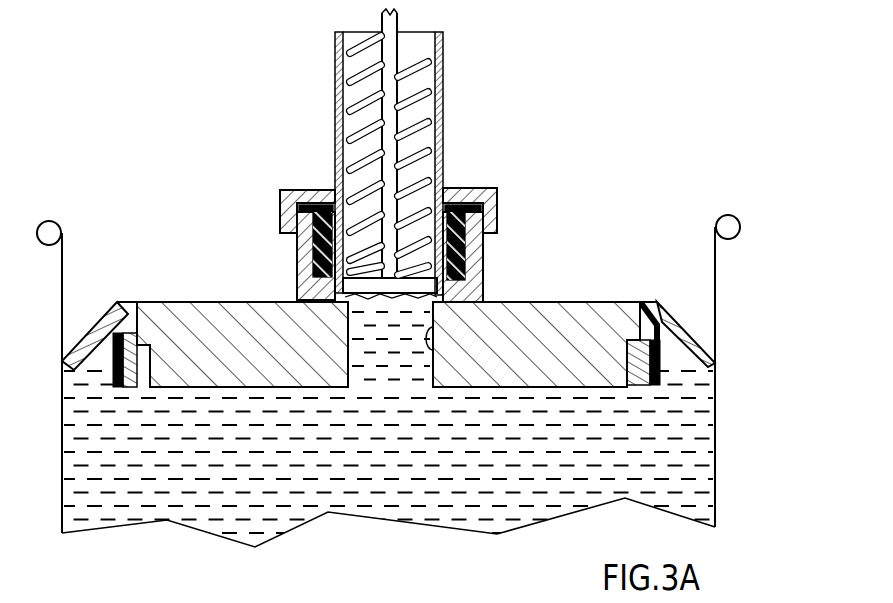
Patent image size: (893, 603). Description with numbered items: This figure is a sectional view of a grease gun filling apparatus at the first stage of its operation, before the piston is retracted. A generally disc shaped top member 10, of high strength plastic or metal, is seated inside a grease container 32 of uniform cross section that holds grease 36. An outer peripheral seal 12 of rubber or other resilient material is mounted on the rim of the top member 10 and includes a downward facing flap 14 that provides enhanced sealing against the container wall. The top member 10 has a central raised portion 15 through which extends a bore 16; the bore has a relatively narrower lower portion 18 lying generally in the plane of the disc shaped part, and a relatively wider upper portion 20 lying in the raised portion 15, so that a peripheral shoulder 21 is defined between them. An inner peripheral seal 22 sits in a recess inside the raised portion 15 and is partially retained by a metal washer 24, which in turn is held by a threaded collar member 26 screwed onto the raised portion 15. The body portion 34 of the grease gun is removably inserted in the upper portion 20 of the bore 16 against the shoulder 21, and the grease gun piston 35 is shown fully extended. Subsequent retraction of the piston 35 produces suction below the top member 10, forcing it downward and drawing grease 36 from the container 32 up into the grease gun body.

The top member 10 is at (560, 302).
The outer peripheral seal 12 is at (650, 300).
The downward facing flap 14 is at (687, 323).
The central raised portion 15 is at (483, 265).
The bore 16 is at (465, 222).
The lower portion of bore 18 is at (433, 332).
The upper portion of bore 20 is at (362, 258).
The peripheral shoulder 21 is at (333, 283).
The inner peripheral seal 22 is at (313, 262).
The metal washer 24 is at (297, 204).
The threaded collar member 26 is at (490, 188).
The grease container 32 is at (718, 368).
The body portion of grease gun 34 is at (335, 90).
The grease gun piston 35 is at (401, 290).
The grease 36 is at (627, 462).